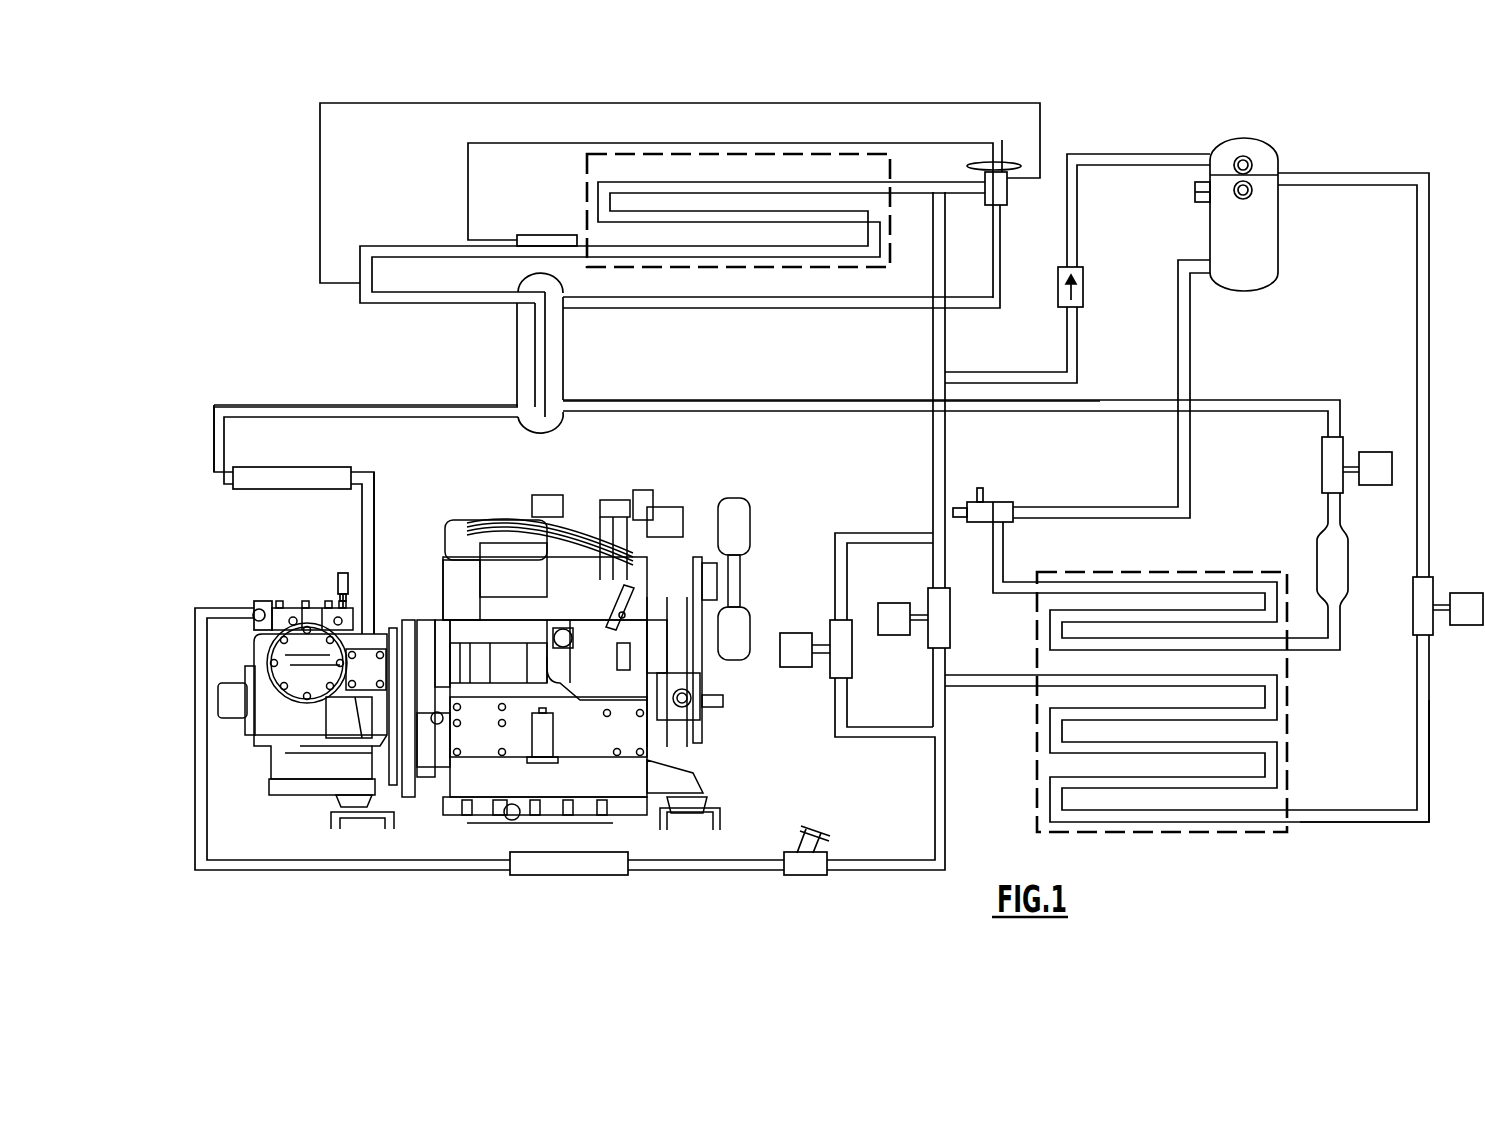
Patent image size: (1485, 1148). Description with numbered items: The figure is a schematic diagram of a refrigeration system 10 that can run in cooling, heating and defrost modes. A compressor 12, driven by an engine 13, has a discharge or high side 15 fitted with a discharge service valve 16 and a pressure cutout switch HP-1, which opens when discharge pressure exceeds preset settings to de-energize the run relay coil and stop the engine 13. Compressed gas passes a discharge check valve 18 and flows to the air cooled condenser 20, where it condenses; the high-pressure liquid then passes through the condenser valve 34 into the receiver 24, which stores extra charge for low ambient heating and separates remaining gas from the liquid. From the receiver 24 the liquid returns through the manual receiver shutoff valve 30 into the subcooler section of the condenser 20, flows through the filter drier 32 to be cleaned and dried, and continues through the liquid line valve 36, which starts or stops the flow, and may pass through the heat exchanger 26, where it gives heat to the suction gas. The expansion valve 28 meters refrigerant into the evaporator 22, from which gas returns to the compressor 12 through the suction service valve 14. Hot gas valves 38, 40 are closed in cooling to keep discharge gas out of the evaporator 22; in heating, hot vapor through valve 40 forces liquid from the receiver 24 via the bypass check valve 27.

The refrigeration system 10 is at (1395, 833).
The compressor 12 is at (400, 780).
The engine 13 is at (677, 757).
The suction service valve 14 is at (362, 650).
The discharge or high side 15 is at (380, 557).
The discharge service valve 16 is at (262, 597).
The discharge check valve 18 is at (813, 875).
The air cooled condenser 20 is at (1133, 832).
The evaporator 22 is at (772, 153).
The receiver 24 is at (1277, 238).
The heat exchanger 26 is at (567, 380).
The bypass check valve 27 is at (1085, 285).
The expansion valve 28 is at (977, 163).
The manual receiver shutoff valve 30 is at (983, 492).
The filter drier 32 is at (1317, 543).
The condenser valve 34 is at (1463, 593).
The liquid line valve 36 is at (1322, 460).
The hot gas valve 38 is at (888, 603).
The hot gas valve 40 is at (853, 663).
The pressure cutout switch HP-1 is at (338, 572).